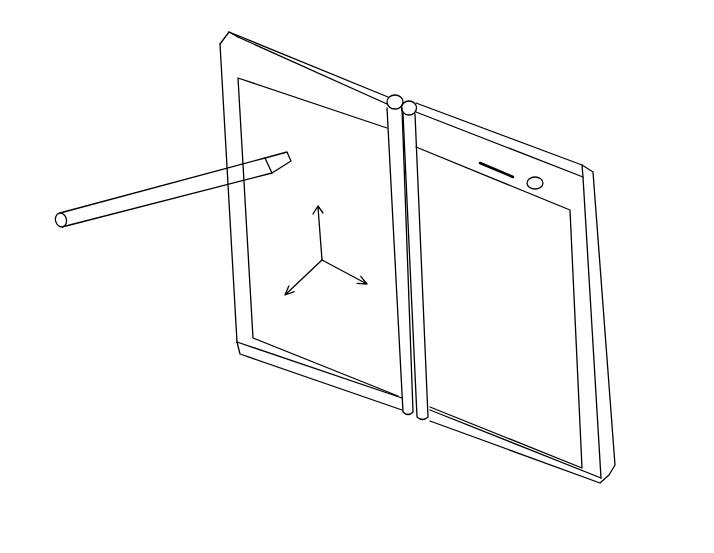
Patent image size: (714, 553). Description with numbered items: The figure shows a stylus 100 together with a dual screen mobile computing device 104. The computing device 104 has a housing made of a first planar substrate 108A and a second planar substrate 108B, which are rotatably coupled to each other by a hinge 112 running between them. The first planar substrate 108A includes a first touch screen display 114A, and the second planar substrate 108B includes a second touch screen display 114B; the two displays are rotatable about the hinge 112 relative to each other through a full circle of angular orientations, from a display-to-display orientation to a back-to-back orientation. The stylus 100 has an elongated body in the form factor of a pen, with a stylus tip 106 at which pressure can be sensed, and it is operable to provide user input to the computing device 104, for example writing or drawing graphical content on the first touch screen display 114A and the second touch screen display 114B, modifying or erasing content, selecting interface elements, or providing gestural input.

The stylus 100 is at (127, 203).
The dual screen mobile computing device 104 is at (530, 77).
The stylus tip 106 is at (290, 152).
The first planar substrate 108A is at (528, 458).
The second planar substrate 108B is at (338, 388).
The hinge 112 is at (413, 100).
The first touch screen display 114A is at (350, 341).
The second touch screen display 114B is at (528, 402).